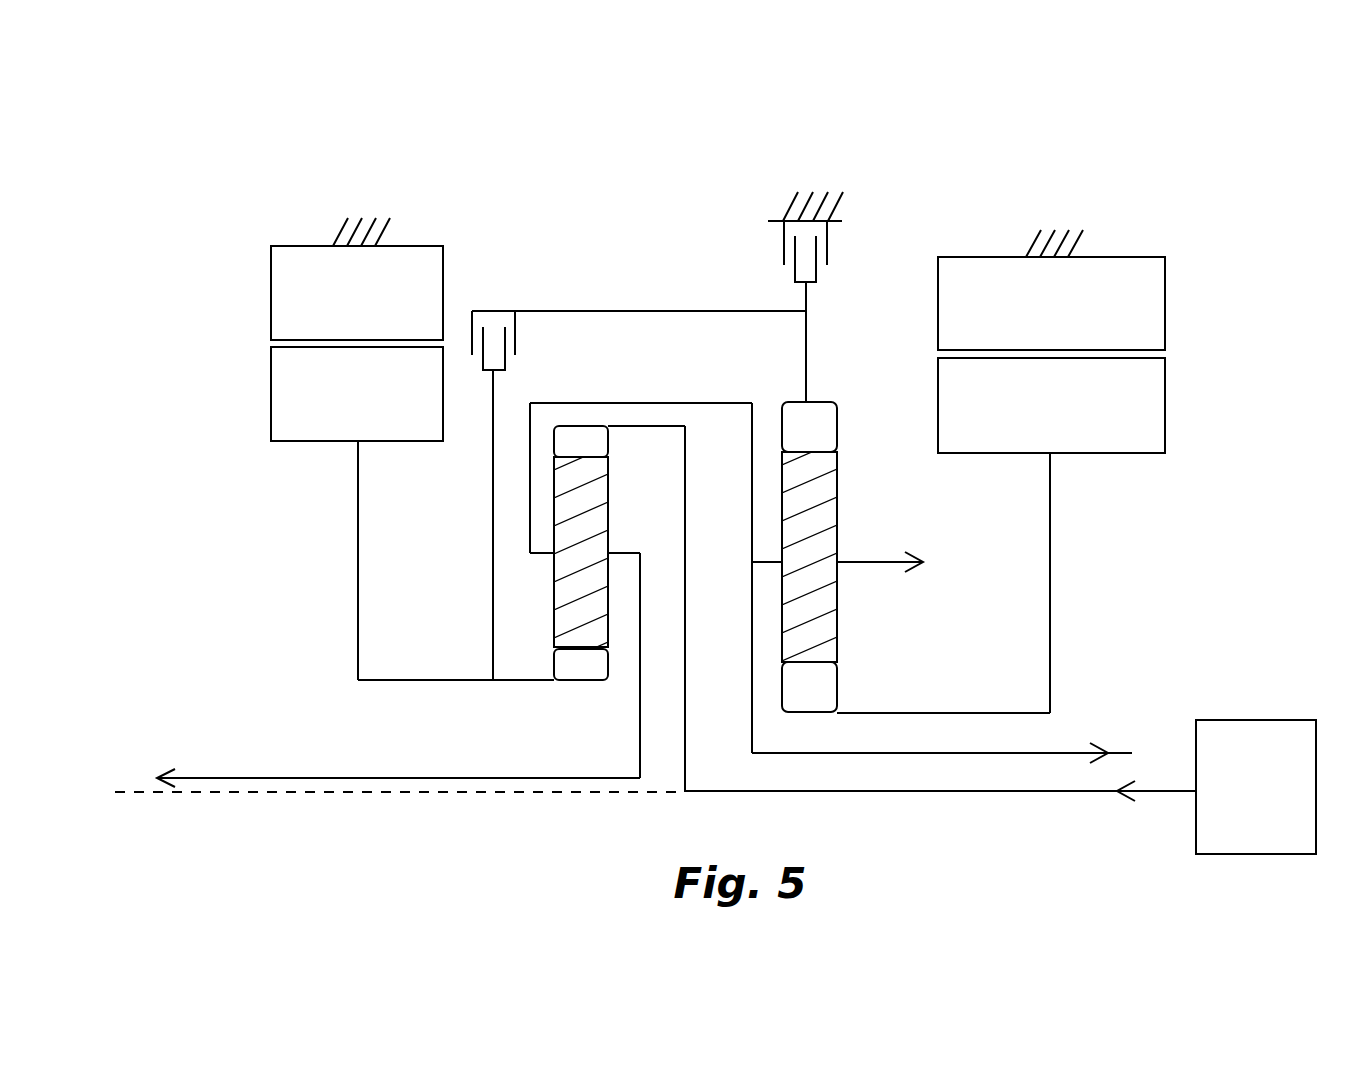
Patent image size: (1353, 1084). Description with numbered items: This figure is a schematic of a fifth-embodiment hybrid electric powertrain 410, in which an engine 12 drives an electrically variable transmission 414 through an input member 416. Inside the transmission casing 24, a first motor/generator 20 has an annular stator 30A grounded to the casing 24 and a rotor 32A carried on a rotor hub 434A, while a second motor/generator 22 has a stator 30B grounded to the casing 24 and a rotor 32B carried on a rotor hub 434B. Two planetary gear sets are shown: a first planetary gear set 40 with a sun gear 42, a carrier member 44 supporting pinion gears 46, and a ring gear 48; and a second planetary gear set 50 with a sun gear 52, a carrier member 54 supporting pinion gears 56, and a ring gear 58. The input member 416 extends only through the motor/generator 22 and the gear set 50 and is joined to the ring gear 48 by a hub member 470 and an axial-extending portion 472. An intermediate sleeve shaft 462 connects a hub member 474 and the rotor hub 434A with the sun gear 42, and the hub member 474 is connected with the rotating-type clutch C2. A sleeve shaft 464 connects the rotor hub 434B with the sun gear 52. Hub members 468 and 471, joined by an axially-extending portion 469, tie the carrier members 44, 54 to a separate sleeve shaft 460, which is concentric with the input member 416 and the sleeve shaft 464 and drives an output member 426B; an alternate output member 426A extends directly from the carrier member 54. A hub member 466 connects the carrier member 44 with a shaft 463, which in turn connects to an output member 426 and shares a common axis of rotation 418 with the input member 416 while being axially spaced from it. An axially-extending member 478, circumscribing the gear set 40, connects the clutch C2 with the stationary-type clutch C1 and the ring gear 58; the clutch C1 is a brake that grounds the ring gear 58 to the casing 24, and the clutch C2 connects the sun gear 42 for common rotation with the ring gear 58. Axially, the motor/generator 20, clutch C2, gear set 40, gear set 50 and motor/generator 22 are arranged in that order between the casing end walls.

The engine 12 is at (1256, 787).
The first motor/generator 20 is at (307, 343).
The second motor/generator 22 is at (1103, 355).
The transmission casing 24 is at (341, 233).
The stator 30A is at (357, 293).
The stator 30B is at (1051, 303).
The rotor 32A is at (357, 394).
The rotor 32B is at (1051, 405).
The first planetary gear set 40 is at (558, 571).
The sun gear 42 is at (608, 670).
The carrier member 44 is at (627, 553).
The pinion gears 46 is at (554, 567).
The ring gear 48 is at (608, 452).
The second planetary gear set 50 is at (827, 557).
The sun gear 52 is at (837, 693).
The carrier member 54 is at (767, 562).
The pinion gears 56 is at (837, 478).
The ring gear 58 is at (837, 428).
The powertrain 410 is at (1140, 168).
The electrically variable transmission 414 is at (250, 205).
The input member 416 is at (1095, 793).
The axis of rotation 418 is at (410, 793).
The output member 426 is at (198, 782).
The alternate output member 426A is at (878, 565).
The output member 426B is at (1115, 753).
The rotor hub 434A is at (358, 528).
The rotor hub 434B is at (1050, 625).
The sleeve shaft 460 is at (1013, 755).
The intermediate sleeve shaft 462 is at (405, 680).
The shaft 463 is at (293, 780).
The sleeve shaft 464 is at (985, 713).
The hub member 466 is at (640, 608).
The hub member 468 is at (752, 680).
The axially-extending portion 469 is at (622, 403).
The hub member 470 is at (685, 475).
The hub member 471 is at (528, 437).
The axial-extending portion 472 is at (672, 426).
The hub member 474 is at (493, 505).
The axially-extending member 478 is at (572, 311).
The stationary-type clutch C1 is at (758, 259).
The rotating-type clutch C2 is at (530, 359).